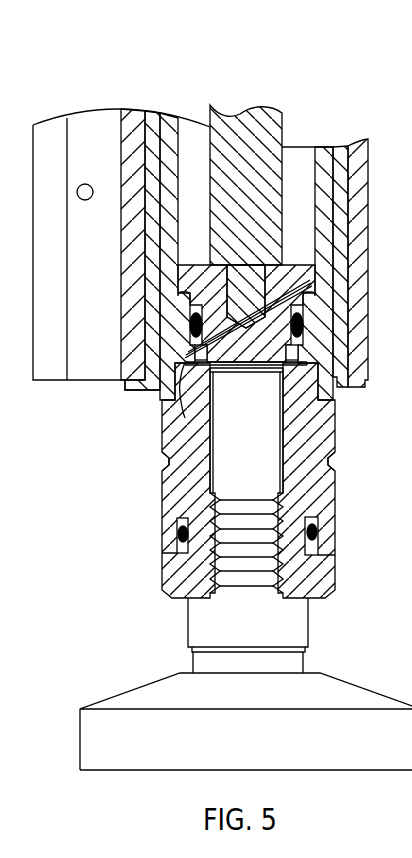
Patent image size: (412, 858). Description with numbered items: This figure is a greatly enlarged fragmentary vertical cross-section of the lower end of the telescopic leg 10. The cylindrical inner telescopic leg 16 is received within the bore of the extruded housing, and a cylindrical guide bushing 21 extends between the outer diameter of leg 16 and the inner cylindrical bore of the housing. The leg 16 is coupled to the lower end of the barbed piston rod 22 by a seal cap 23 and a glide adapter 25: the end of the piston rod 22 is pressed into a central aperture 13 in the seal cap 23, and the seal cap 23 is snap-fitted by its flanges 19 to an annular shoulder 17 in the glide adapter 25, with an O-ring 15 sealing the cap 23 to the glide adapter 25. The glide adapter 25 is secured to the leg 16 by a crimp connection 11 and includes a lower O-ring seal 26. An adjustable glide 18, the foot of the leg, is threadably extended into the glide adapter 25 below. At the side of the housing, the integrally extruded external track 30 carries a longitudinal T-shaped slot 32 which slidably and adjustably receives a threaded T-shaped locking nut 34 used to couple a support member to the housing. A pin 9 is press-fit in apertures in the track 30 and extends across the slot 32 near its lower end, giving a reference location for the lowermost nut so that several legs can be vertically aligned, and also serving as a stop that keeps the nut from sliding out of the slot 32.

The pin 9 is at (78, 196).
The telescopic leg 10 is at (140, 70).
The crimp connection 11 is at (162, 458).
The central aperture 13 is at (258, 280).
The O-ring 15 is at (303, 312).
The inner telescopic leg 16 is at (333, 487).
The annular shoulder 17 is at (300, 340).
The adjustable glide 18 is at (357, 685).
The flanges 19 is at (178, 410).
The cylindrical guide bushing 21 is at (357, 388).
The piston rod 22 is at (283, 163).
The seal cap 23 is at (305, 260).
The glide adapter 25 is at (310, 422).
The lower O-ring seal 26 is at (318, 532).
The track 30 is at (85, 392).
The T-shaped slot 32 is at (95, 127).
The T-shaped locking nut 34 is at (266, 243).